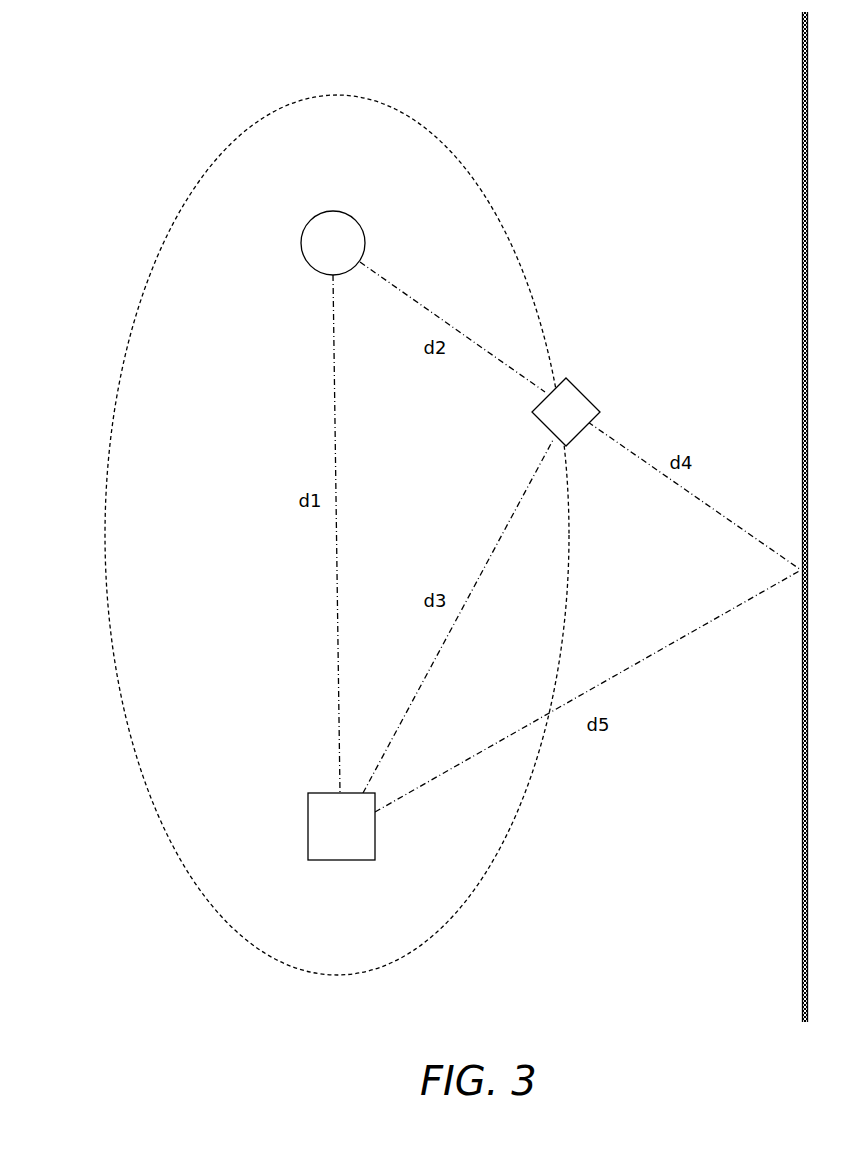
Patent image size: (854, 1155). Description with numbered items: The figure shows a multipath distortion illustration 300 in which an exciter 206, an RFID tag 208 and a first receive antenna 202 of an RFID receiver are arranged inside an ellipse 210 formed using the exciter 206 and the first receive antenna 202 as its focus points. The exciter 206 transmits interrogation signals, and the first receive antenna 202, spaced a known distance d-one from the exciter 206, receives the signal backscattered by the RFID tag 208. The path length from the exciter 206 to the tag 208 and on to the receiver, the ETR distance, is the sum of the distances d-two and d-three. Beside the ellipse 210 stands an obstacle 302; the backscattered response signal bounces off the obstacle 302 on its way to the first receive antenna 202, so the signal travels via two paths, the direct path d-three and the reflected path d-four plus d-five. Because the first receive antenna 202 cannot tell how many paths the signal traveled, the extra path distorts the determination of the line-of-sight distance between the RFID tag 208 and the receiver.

The first receive antenna RX1 202 is at (308, 820).
The exciter 206 is at (304, 224).
The RFID tag 208 is at (582, 392).
The ellipse 210 is at (122, 345).
The multipath distortion illustration 300 is at (163, 952).
The obstacle 302 is at (800, 135).